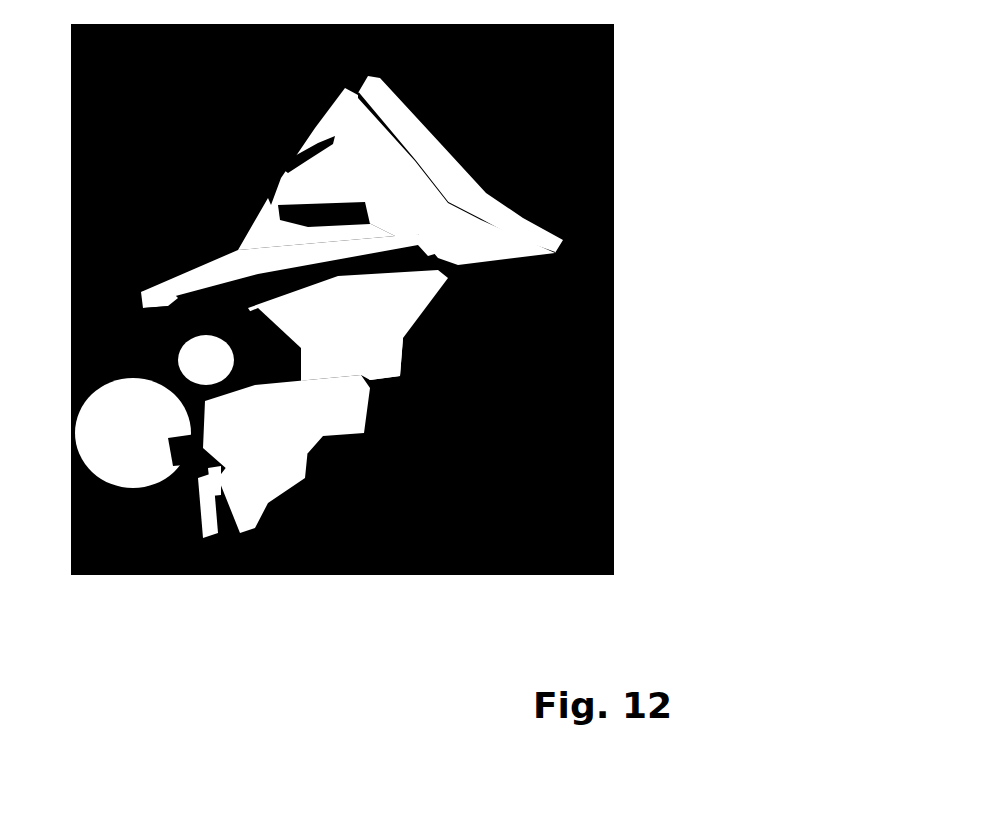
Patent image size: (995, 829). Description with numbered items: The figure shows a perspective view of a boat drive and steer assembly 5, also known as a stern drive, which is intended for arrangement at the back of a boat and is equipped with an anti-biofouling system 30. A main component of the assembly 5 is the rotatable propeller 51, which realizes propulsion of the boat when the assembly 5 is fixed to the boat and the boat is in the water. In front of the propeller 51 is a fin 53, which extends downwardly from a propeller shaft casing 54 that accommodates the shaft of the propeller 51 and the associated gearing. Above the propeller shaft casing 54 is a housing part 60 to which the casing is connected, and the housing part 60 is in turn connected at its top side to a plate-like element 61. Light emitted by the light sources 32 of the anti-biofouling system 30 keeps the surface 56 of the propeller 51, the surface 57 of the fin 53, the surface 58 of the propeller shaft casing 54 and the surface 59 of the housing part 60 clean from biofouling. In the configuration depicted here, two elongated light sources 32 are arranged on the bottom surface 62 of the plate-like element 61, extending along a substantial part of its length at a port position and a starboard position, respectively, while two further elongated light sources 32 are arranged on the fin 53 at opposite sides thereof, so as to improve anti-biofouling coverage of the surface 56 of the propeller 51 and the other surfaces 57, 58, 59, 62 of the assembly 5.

The boat drive and steer assembly 5 is at (560, 98).
The anti-biofouling system 30 is at (455, 253).
The light source 32 is at (400, 288).
The propeller 51 is at (87, 463).
The fin 53 is at (260, 473).
The propeller shaft casing 54 is at (293, 410).
The surface of the propeller 56 is at (118, 418).
The surface of the fin 57 is at (222, 520).
The surface of the propeller shaft casing 58 is at (313, 403).
The surface of the housing part 59 is at (355, 328).
The housing part 60 is at (352, 340).
The plate-like element 61 is at (127, 310).
The bottom surface of the plate-like element 62 is at (167, 320).